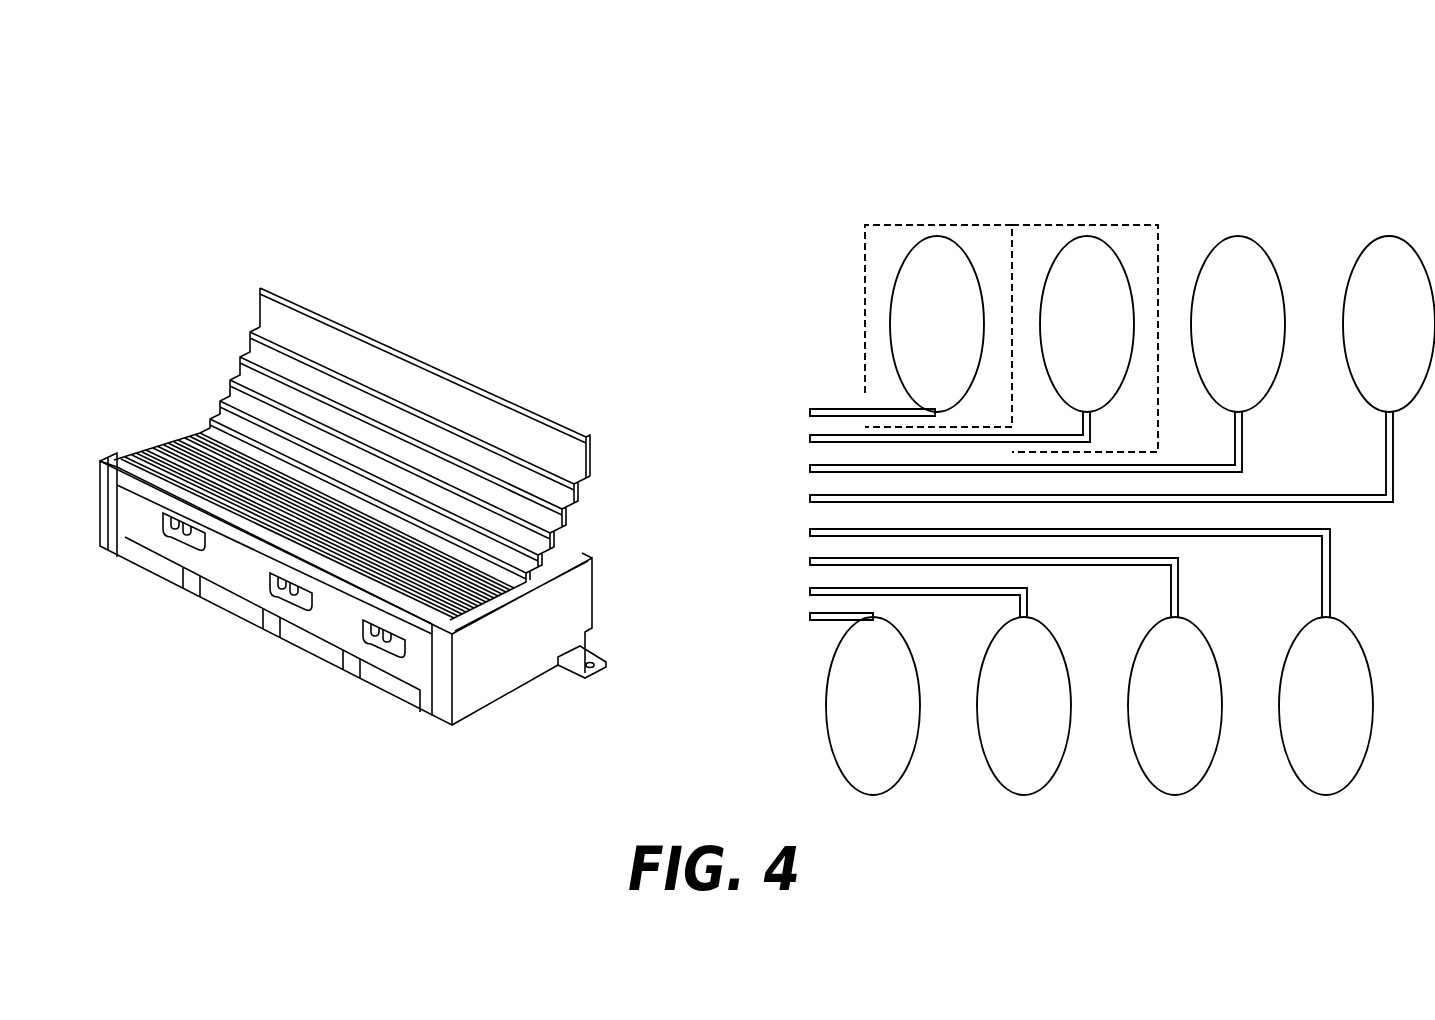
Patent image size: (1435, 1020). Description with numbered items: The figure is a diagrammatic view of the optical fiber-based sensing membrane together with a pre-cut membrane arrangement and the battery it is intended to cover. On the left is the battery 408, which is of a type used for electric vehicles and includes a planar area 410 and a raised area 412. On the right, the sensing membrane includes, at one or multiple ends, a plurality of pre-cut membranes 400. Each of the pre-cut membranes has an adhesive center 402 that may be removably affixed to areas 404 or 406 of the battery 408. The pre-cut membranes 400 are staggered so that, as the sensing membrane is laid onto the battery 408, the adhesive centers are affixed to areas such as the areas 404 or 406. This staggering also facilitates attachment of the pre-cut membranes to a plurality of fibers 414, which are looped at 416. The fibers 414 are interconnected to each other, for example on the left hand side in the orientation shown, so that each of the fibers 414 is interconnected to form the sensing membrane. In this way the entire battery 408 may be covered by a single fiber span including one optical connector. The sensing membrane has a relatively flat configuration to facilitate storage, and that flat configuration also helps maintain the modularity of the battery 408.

The pre-cut membranes 400 is at (1071, 413).
The adhesive center 402 is at (940, 305).
The area 404 is at (526, 478).
The area 406 is at (574, 530).
The battery 408 is at (376, 390).
The planar area 410 is at (182, 456).
The raised area 412 is at (262, 286).
The fibers 414 is at (808, 408).
The loop 416 is at (903, 262).